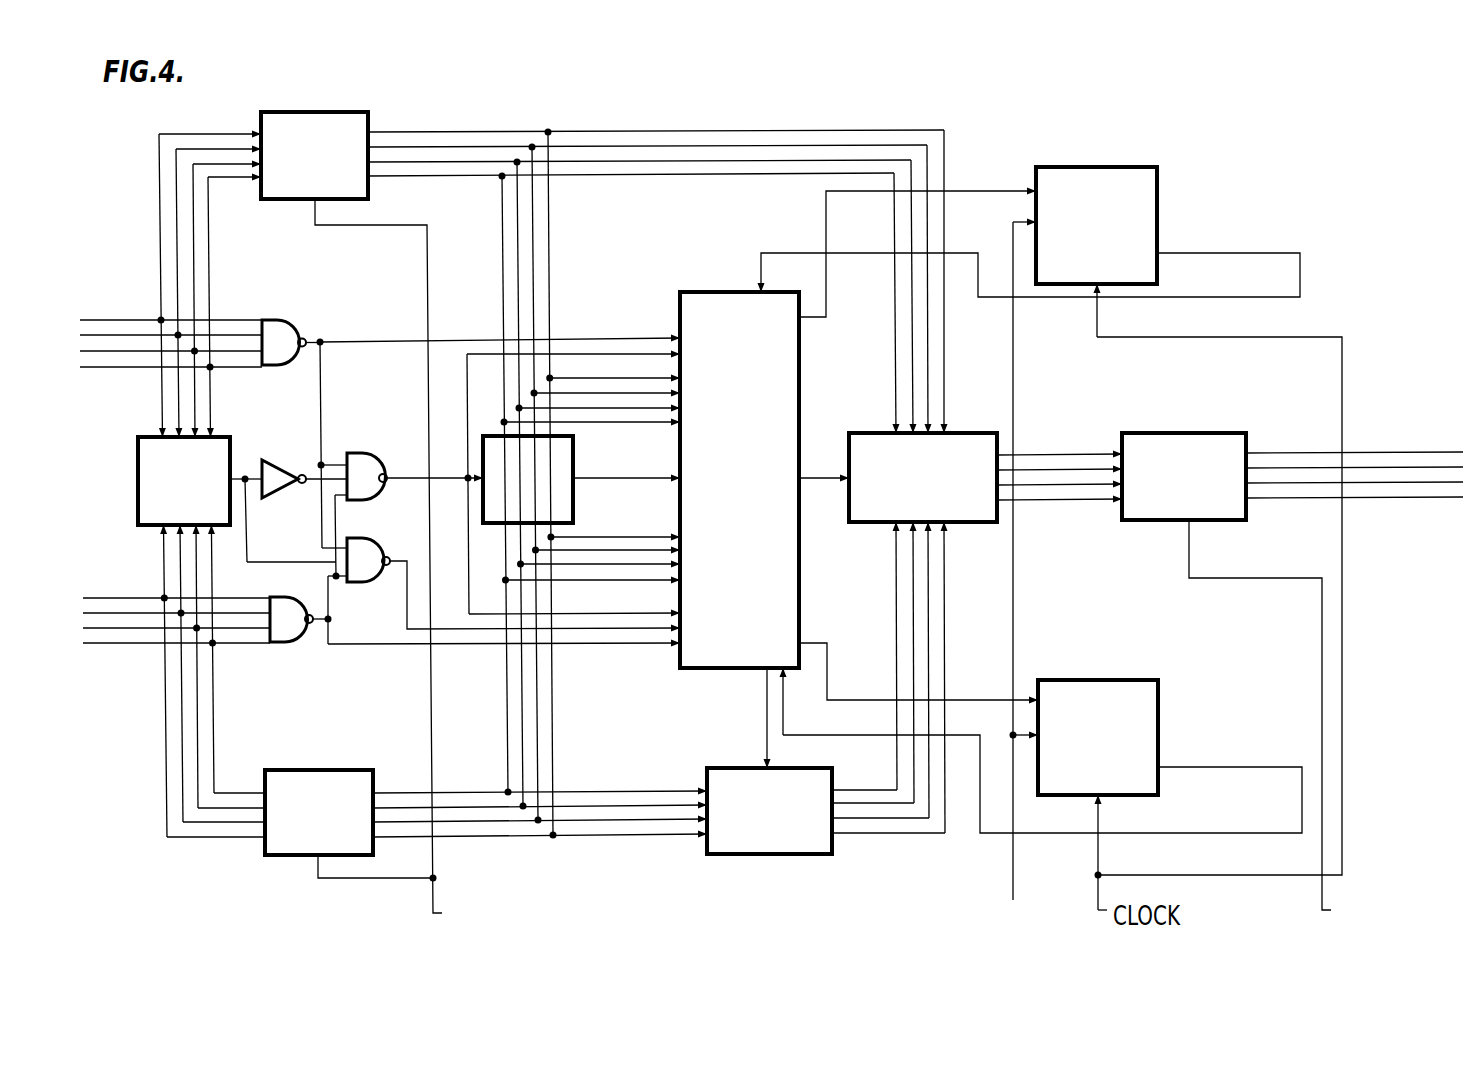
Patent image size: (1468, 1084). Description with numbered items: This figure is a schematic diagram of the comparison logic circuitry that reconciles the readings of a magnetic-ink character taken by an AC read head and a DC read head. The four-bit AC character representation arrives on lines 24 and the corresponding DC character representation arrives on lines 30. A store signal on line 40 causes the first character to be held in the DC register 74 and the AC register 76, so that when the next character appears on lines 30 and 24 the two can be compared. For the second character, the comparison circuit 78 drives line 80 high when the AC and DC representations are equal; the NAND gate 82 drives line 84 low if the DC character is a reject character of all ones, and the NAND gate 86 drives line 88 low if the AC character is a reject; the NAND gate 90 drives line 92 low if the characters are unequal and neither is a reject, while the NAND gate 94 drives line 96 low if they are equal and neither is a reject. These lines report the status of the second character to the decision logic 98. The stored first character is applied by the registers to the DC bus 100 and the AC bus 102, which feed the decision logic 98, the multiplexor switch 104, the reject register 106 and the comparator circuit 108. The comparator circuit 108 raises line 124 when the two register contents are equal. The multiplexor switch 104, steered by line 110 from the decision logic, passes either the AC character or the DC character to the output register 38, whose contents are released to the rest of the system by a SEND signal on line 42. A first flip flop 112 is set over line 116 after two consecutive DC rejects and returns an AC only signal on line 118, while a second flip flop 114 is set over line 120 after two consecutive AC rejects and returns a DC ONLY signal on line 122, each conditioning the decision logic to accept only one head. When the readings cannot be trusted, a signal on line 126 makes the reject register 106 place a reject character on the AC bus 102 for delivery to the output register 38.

The AC character representation lines 24 is at (122, 646).
The DC character representation lines 30 is at (125, 368).
The output register 38 is at (1246, 436).
The store signal line 40 is at (433, 898).
The SEND signal line 42 is at (1320, 892).
The DC register 74 is at (373, 112).
The AC register 76 is at (369, 770).
The comparison circuit 78 is at (229, 437).
The line 80 is at (246, 470).
The NAND gate 82 is at (283, 321).
The line 84 is at (324, 340).
The NAND gate 86 is at (283, 646).
The line 88 is at (345, 646).
The NAND gate 90 is at (346, 453).
The line 92 is at (466, 477).
The NAND gate 94 is at (364, 538).
The line 96 is at (407, 598).
The decision logic 98 is at (703, 290).
The DC bus 100 is at (548, 132).
The AC bus 102 is at (553, 838).
The multiplexor switch 104 is at (849, 433).
The reject register 106 is at (708, 767).
The comparator circuit 108 is at (574, 446).
The line 110 is at (826, 481).
The first flip flop 112 is at (1159, 180).
The second flip flop 114 is at (1092, 680).
The line 116 is at (960, 190).
The AC only signal line 118 is at (784, 253).
The line 120 is at (820, 643).
The DC ONLY signal line 122 is at (810, 735).
The line 124 is at (628, 477).
The line 126 is at (767, 703).